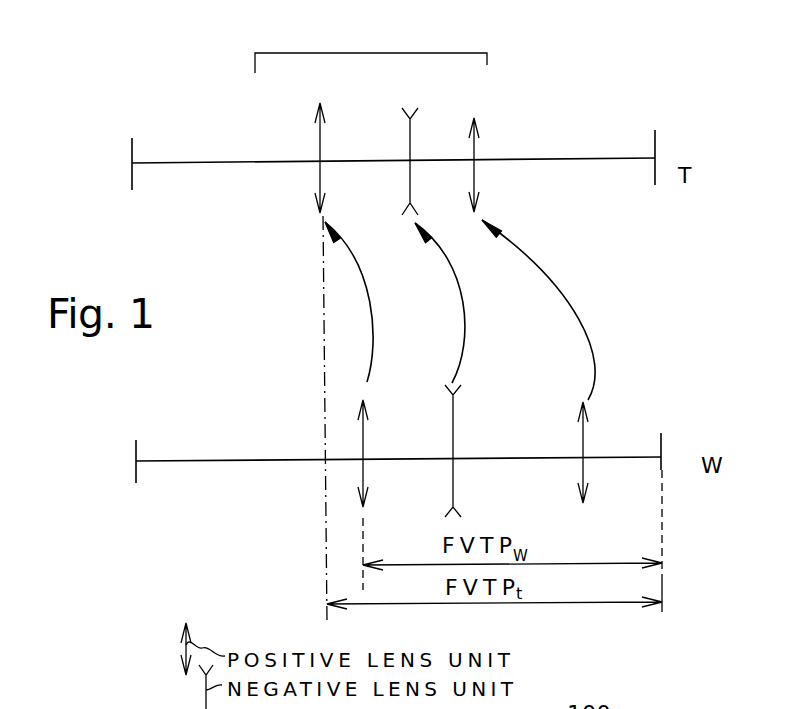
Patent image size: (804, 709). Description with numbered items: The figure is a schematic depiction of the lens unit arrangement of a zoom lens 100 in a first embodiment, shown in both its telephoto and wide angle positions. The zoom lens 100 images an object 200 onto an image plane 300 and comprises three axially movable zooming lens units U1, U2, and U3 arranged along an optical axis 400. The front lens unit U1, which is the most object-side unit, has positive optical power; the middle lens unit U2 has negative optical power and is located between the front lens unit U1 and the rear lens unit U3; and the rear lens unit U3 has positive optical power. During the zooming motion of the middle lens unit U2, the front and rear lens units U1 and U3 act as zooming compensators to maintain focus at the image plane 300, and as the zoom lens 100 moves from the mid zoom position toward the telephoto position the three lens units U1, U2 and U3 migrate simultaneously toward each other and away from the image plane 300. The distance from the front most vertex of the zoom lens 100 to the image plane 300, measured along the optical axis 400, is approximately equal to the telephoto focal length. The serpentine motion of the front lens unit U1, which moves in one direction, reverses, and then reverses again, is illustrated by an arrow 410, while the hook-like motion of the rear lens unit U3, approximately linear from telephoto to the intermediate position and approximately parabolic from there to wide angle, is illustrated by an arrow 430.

The zoom lens 100 is at (422, 3).
The object 200 is at (132, 145).
The image plane 300 is at (657, 140).
The optical axis 400 is at (198, 165).
The arrow 410 is at (372, 300).
The arrow 430 is at (593, 346).
The front lens unit U1 is at (320, 140).
The middle lens unit U2 is at (410, 140).
The rear lens unit U3 is at (474, 145).